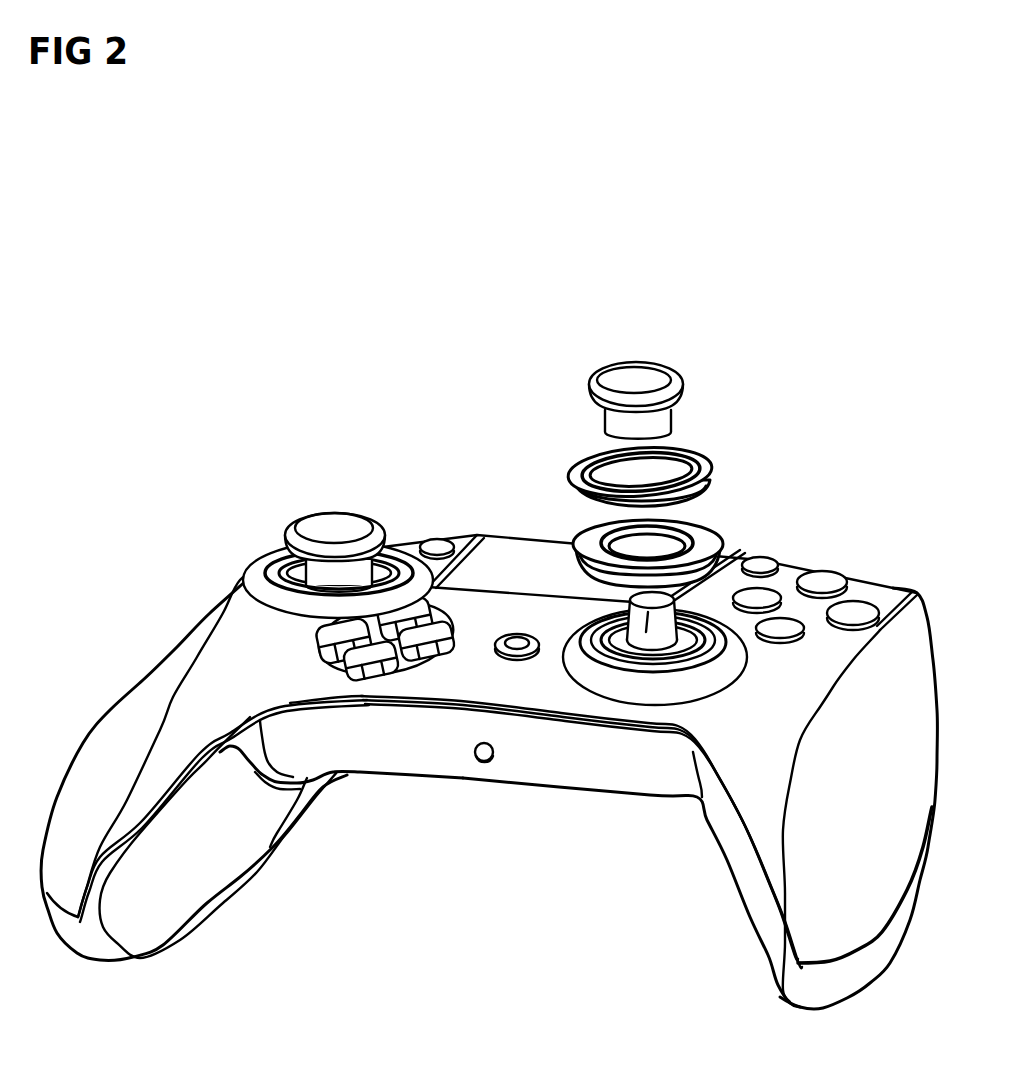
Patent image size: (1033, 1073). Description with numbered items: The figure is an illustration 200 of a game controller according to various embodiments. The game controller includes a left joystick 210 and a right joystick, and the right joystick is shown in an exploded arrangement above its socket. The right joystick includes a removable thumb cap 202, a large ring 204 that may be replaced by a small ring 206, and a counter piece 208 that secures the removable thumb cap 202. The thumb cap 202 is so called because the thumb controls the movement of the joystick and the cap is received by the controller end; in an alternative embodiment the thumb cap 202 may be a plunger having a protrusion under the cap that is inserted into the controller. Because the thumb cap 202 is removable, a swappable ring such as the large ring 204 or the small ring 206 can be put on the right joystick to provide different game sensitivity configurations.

The illustration 200 is at (862, 132).
The removable thumb cap 202 is at (638, 362).
The large ring 204 is at (706, 470).
The small ring 206 is at (588, 545).
The counter piece 208 is at (790, 568).
The left joystick 210 is at (341, 528).